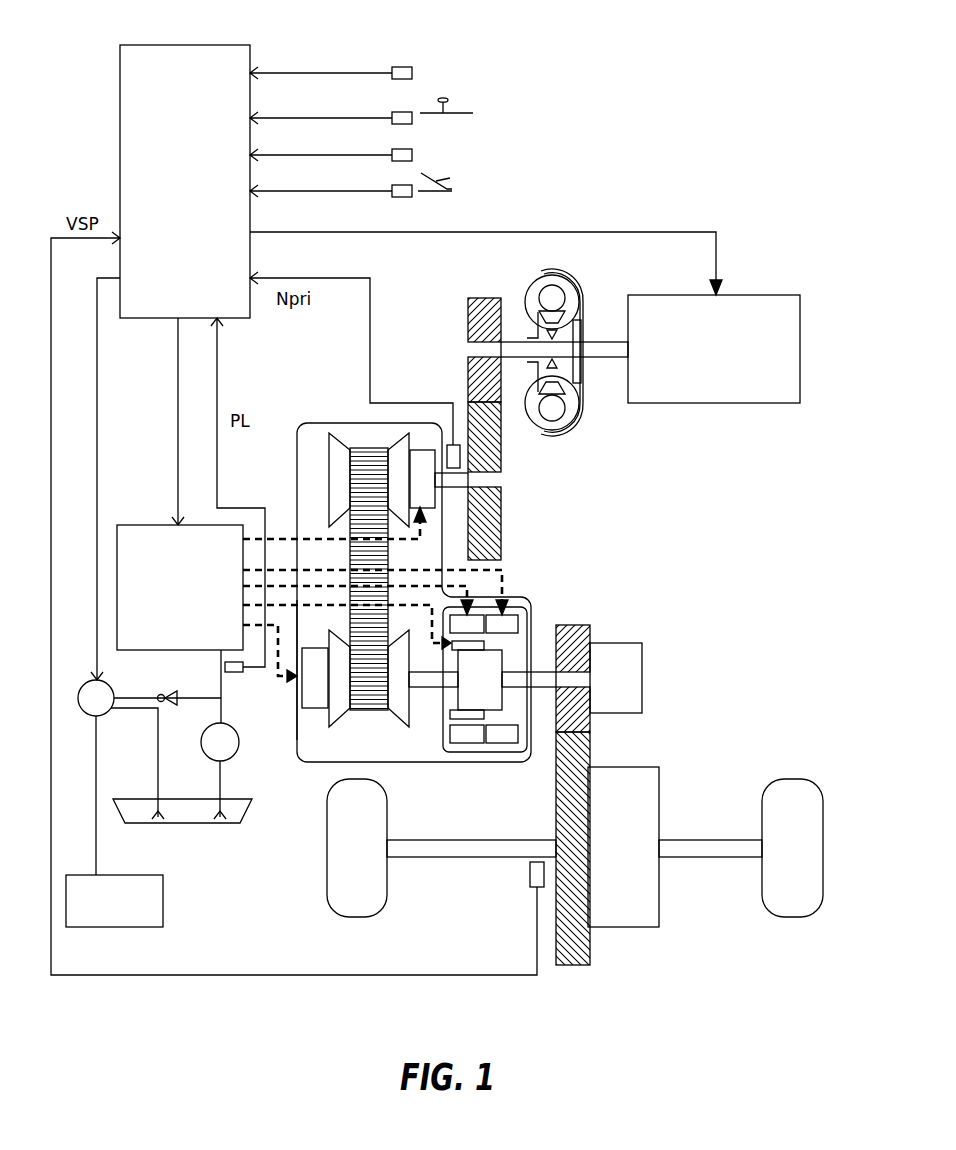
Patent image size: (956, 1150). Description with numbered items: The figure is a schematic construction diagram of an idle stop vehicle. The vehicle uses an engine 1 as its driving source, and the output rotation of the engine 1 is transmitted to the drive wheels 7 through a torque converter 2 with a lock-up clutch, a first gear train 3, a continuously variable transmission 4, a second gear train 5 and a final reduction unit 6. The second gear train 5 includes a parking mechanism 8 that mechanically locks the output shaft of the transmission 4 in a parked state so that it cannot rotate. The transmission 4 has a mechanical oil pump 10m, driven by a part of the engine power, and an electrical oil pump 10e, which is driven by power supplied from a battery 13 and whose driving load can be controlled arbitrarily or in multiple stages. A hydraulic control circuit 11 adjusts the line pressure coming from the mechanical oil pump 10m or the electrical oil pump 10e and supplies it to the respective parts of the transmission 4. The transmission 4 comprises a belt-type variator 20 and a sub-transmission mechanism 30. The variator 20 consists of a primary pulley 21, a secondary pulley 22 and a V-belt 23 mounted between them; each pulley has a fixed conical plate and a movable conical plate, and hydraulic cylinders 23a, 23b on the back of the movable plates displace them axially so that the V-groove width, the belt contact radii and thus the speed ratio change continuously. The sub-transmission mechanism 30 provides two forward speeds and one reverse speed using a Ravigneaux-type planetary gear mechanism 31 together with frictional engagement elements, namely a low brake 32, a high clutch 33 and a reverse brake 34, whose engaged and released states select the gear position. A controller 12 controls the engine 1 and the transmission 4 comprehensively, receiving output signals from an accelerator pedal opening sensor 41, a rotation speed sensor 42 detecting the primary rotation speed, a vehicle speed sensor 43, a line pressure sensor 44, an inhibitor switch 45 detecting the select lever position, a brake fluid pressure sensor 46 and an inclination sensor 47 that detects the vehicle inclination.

The engine 1 is at (787, 310).
The torque converter 2 is at (583, 300).
The first gear train 3 is at (492, 285).
The transmission 4 is at (340, 423).
The second gear train 5 is at (580, 983).
The final reduction unit 6 is at (625, 917).
The drive wheels 7 is at (357, 905).
The parking mechanism 8 is at (628, 668).
The electrical oil pump 10e is at (100, 716).
The mechanical oil pump 10m is at (232, 750).
The hydraulic control circuit 11 is at (135, 528).
The controller 12 is at (230, 55).
The battery 13 is at (160, 912).
The variator 20 is at (320, 440).
The primary pulley 21 is at (343, 480).
The secondary pulley 22 is at (340, 690).
The V-belt 23 is at (371, 448).
The hydraulic cylinder 23a is at (420, 458).
The hydraulic cylinder 23b is at (310, 700).
The sub-transmission mechanism 30 is at (530, 612).
The Ravigneaux-type planetary gear mechanism 31 is at (485, 672).
The low brake 32 is at (470, 625).
The high clutch 33 is at (466, 713).
The reverse brake 34 is at (500, 626).
The accelerator pedal opening sensor 41 is at (399, 198).
The rotation speed sensor 42 is at (452, 455).
The vehicle speed sensor 43 is at (532, 878).
The line pressure sensor 44 is at (230, 672).
The inhibitor switch 45 is at (400, 115).
The brake fluid pressure sensor 46 is at (398, 160).
The inclination sensor 47 is at (400, 70).